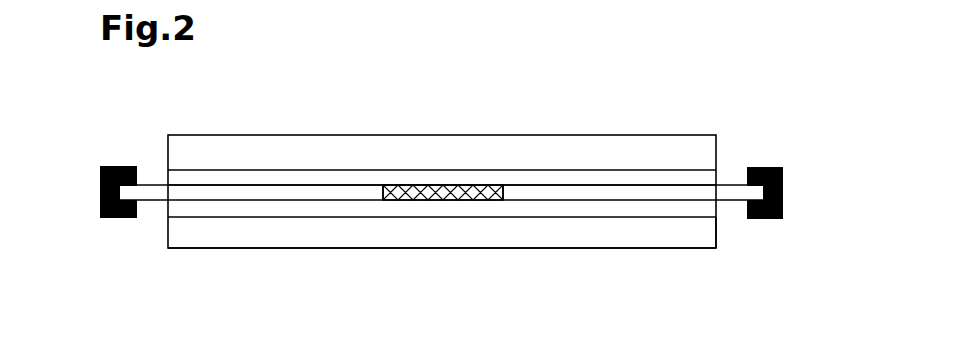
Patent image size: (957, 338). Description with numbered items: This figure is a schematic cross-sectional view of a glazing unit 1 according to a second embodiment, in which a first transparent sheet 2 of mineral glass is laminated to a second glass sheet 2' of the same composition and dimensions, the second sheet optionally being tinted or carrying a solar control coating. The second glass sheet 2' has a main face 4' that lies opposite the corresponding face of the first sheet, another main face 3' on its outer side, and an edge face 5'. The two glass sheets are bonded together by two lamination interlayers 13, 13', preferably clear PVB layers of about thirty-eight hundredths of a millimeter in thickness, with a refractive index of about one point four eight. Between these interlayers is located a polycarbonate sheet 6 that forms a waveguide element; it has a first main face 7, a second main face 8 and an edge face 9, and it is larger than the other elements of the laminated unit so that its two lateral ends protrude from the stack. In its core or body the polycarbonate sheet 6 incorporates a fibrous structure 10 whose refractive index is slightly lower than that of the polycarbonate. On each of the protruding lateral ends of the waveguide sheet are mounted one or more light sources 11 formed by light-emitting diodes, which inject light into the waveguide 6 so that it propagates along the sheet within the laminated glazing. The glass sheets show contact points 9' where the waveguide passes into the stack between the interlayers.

The layered assembly 1 is at (555, 96).
The first transparent sheet 2 is at (442, 113).
The second glass sheet 2' is at (442, 276).
The lamination interlayer 13 is at (442, 128).
The lamination interlayer 13' is at (281, 261).
The main face 3' is at (334, 290).
The main face 4' is at (632, 265).
The edge face 5' is at (726, 263).
The polycarbonate sheet 6 is at (583, 192).
The first main face 7 is at (527, 184).
The second main face 8 is at (550, 200).
The edge face 9 is at (441, 231).
The contact point 9' is at (443, 244).
The fibrous structure 10 is at (463, 200).
The light sources 11 is at (96, 180).